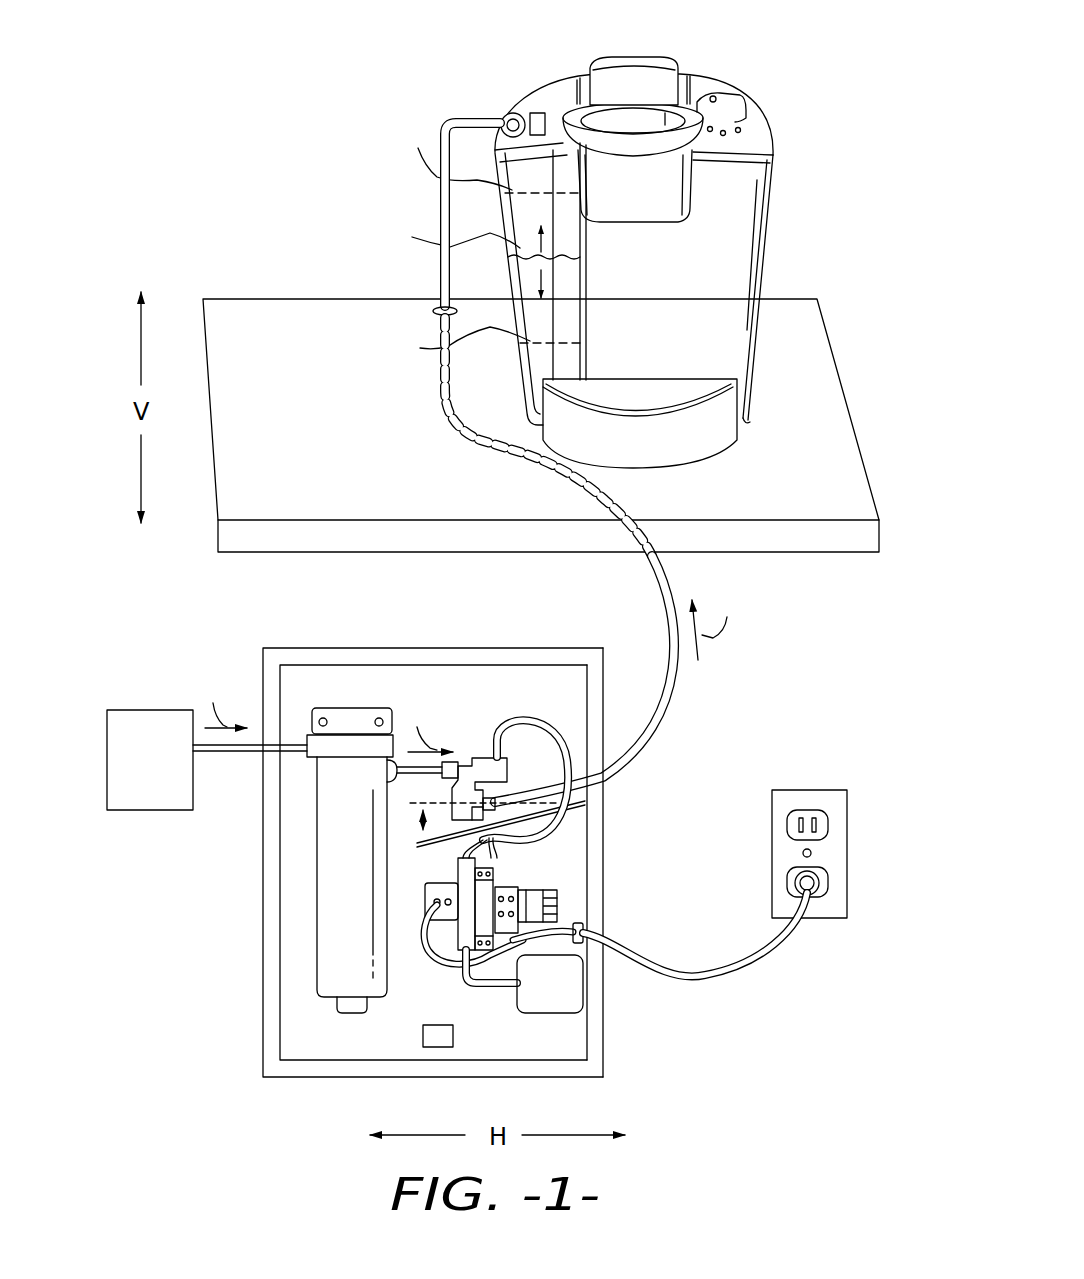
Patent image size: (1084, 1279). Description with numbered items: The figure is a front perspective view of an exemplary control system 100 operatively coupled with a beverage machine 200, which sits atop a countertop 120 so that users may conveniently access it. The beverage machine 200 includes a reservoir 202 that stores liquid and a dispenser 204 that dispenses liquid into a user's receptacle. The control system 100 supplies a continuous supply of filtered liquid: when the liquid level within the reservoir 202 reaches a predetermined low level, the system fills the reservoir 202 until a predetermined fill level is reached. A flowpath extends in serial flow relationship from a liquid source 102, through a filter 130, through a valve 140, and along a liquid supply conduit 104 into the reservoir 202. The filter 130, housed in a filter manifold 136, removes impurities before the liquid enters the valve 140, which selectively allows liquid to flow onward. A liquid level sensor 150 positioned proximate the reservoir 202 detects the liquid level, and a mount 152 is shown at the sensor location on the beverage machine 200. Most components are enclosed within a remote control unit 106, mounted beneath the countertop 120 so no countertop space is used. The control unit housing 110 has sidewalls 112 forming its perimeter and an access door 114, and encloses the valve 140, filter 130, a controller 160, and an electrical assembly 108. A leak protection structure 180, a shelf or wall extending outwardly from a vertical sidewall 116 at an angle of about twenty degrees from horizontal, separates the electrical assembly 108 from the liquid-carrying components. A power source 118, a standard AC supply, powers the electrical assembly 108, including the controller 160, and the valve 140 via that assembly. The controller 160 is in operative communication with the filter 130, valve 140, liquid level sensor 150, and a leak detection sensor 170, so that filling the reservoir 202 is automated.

The control system 100 is at (215, 659).
The liquid source 102 is at (168, 768).
The liquid supply conduit 104 is at (437, 273).
The control unit 106 is at (234, 1034).
The electrical assembly 108 is at (558, 878).
The control unit housing 110 is at (339, 648).
The sidewalls 112 is at (387, 647).
The access door 114 is at (547, 685).
The vertical sidewall 116 is at (605, 705).
The power source 118 is at (860, 806).
The countertop 120 is at (787, 499).
The filter 130 is at (332, 900).
The filter manifold 136 is at (338, 965).
The valve 140 is at (473, 745).
The liquid level sensor 150 is at (560, 112).
The sensor mount 152 is at (494, 108).
The controller 160 is at (567, 985).
The leak detection sensor 170 is at (422, 1036).
The leak protection structure 180 is at (547, 828).
The beverage machine 200 is at (810, 93).
The reservoir 202 is at (503, 213).
The dispenser 204 is at (663, 200).